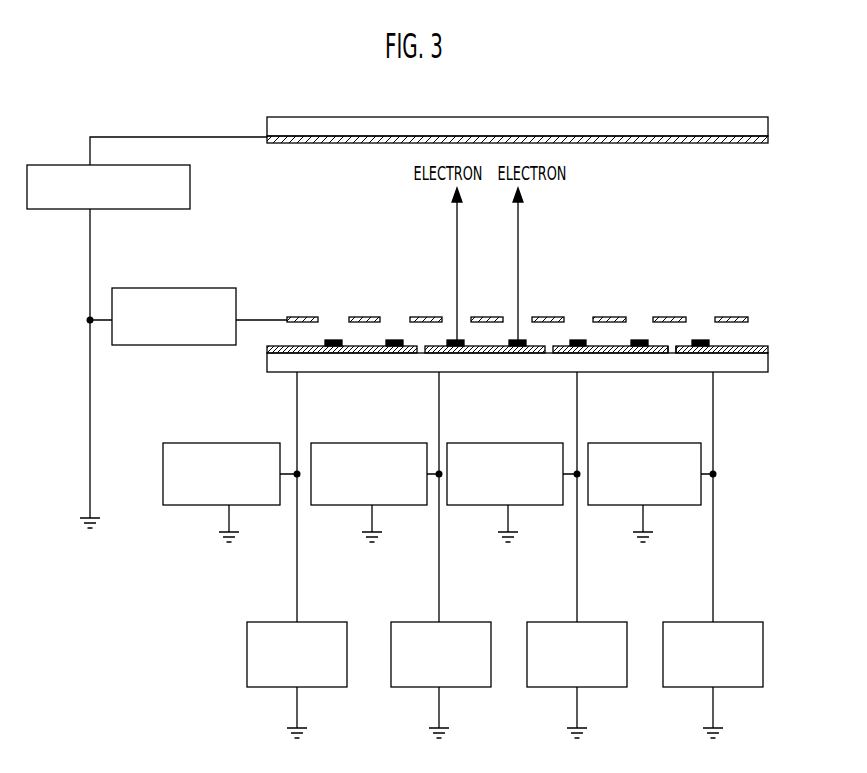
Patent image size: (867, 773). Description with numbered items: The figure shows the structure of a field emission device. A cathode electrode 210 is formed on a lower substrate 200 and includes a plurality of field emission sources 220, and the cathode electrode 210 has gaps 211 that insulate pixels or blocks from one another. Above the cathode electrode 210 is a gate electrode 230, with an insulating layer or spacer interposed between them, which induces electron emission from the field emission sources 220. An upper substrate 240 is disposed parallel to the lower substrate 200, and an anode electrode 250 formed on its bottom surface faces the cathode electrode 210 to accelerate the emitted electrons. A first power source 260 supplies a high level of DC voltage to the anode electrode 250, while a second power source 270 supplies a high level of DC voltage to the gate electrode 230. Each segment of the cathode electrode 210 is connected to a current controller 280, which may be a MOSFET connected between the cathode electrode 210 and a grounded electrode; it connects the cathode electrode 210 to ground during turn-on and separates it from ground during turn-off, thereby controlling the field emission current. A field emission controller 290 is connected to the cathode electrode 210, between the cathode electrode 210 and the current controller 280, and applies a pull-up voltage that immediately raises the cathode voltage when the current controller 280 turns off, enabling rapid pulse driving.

The lower substrate 200 is at (768, 369).
The cathode electrode 210 is at (768, 351).
The gap 211 is at (671, 345).
The field emission source 220 is at (333, 340).
The gate electrode 230 is at (302, 316).
The upper substrate 240 is at (768, 124).
The anode electrode 250 is at (768, 143).
The first power source 260 is at (192, 187).
The second power source 270 is at (167, 288).
The current controller 280 is at (326, 622).
The field emission controller 290 is at (238, 443).